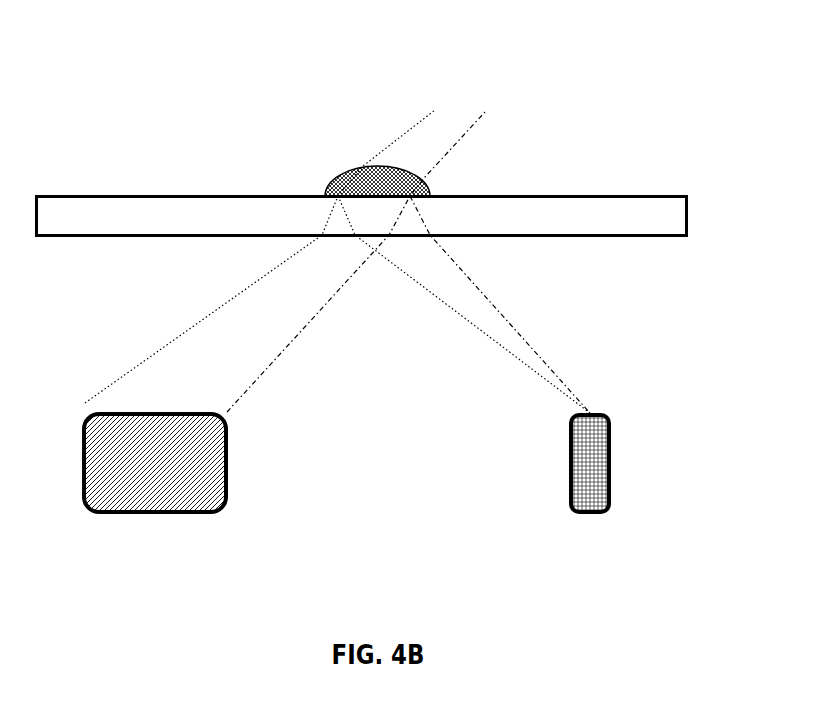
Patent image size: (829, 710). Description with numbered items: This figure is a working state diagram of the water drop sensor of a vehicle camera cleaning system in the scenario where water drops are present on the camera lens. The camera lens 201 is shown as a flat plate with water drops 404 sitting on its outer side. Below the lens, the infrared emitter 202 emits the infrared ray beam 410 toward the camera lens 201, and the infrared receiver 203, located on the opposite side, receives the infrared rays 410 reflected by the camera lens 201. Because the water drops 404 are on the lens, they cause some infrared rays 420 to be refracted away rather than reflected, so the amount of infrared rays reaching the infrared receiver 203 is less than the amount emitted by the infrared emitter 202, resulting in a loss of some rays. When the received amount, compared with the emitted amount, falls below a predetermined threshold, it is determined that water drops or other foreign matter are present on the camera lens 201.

The camera lens 201 is at (562, 202).
The infrared emitter 202 is at (223, 508).
The infrared receiver 203 is at (570, 460).
The water drops 404 is at (339, 176).
The infrared ray beam 410 is at (275, 330).
The refracted infrared rays 420 is at (417, 126).